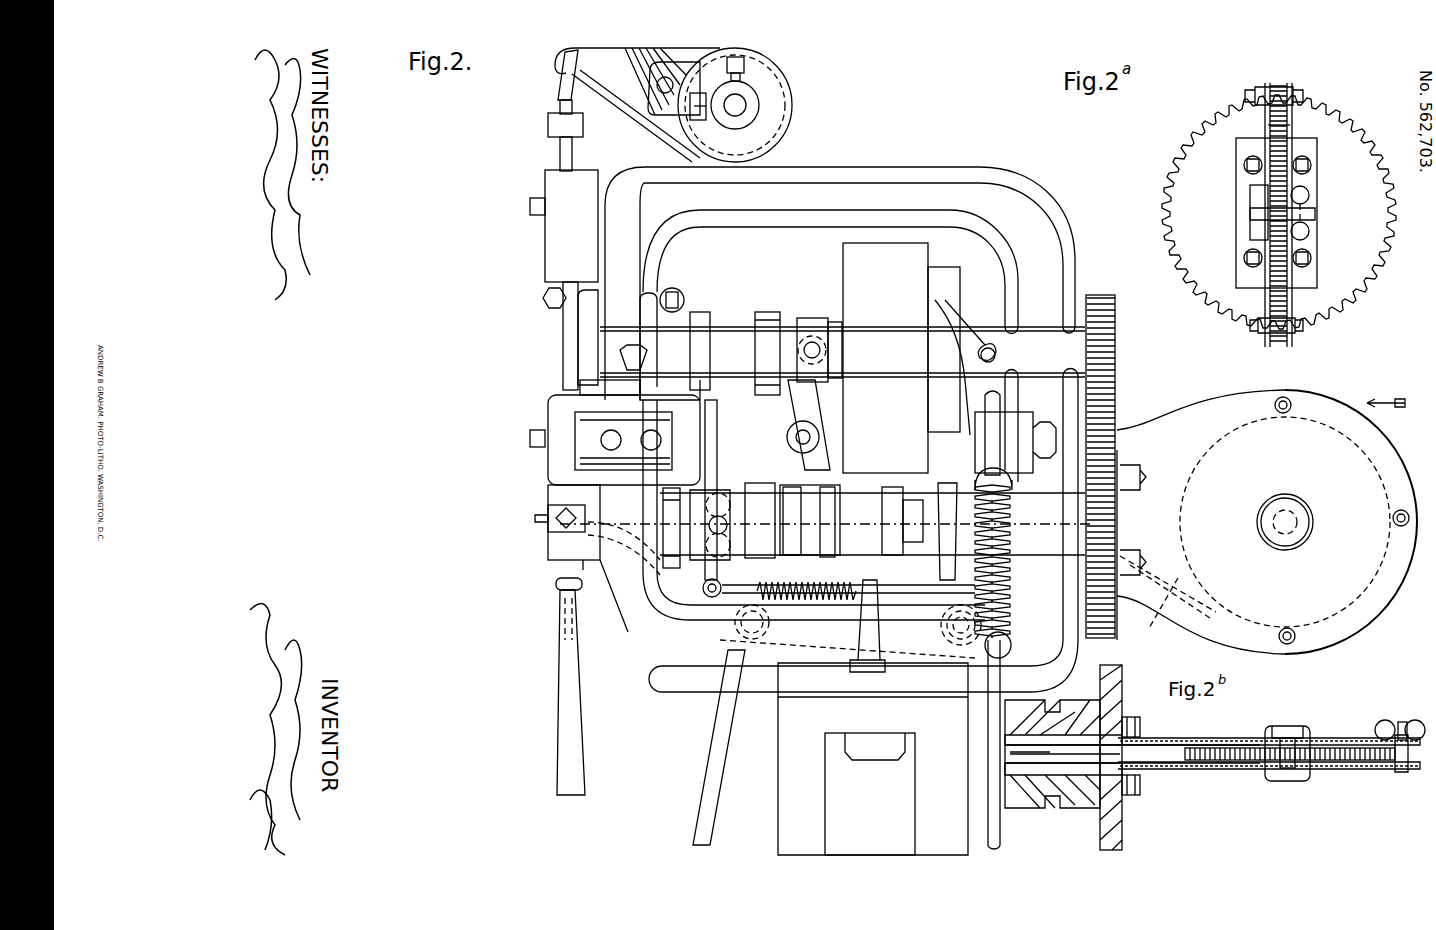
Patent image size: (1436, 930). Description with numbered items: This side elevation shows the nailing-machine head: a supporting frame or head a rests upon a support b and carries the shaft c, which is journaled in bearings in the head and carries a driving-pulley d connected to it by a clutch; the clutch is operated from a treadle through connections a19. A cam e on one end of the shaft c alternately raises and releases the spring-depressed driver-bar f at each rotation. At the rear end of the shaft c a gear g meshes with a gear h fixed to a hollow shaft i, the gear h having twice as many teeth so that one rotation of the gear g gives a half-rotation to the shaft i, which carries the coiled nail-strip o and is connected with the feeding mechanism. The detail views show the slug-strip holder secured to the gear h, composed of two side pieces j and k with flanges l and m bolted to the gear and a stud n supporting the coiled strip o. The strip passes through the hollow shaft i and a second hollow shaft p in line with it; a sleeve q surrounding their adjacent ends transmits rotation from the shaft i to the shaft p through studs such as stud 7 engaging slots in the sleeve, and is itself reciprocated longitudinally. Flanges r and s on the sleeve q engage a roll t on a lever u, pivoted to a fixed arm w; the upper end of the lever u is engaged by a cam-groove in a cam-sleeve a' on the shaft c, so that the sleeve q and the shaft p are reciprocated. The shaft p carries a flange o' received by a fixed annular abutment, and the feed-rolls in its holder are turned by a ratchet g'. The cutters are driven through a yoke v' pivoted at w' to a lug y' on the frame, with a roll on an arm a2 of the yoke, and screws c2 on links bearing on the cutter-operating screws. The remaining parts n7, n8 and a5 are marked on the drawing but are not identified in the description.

In FIG. 2, the pulley n7 is at (745, 68).
In FIG. 2, the pulley set bolt n8 is at (700, 108).
In FIG. 2, the stud 7 is at (745, 281).
In FIG. 2, the screw c2 is at (676, 290).
In FIG. 2, the shaft c is at (752, 325).
In FIG. 2, the lug y' is at (812, 333).
In FIG. 2, the cam-sleeve a' is at (836, 330).
In FIG. 2, the driving-pulley d is at (919, 358).
In FIG. 2, the cam e is at (586, 320).
In FIG. 2, the driver-bar f is at (570, 348).
In FIG. 2, the yoke v' is at (566, 378).
In FIG. 2, the pivot w' is at (598, 440).
In FIG. 2, the fixed arm w is at (777, 425).
In FIG. 2, the flange r is at (800, 490).
In FIG. 2, the ratchet g' is at (716, 498).
In FIG. 2, the support b is at (703, 500).
In FIG. 2, the hollow shaft p is at (738, 505).
In FIG. 2, the sleeve q is at (770, 540).
In FIG. 2, the lever u is at (828, 486).
In FIG. 2, the flange s is at (885, 500).
In FIG. 2, the roll t is at (905, 505).
In FIG. 2, the flange l is at (945, 500).
In FIG. 2A, the flange l is at (1310, 198).
In FIG. 2B, the flange l is at (1132, 720).
In FIG. 2, the arm a2 is at (565, 515).
In FIG. 2, the supporting frame or head a is at (860, 755).
In FIG. 2B, the supporting frame or head a is at (1063, 747).
In FIG. 2, the connection a19 is at (1002, 668).
In FIG. 2, the clamp bolt a5 is at (1000, 432).
In FIG. 2, the gear g is at (1112, 466).
In FIG. 2, the gear h is at (1118, 430).
In FIG. 2A, the gear h is at (1188, 165).
In FIG. 2B, the gear h is at (1110, 702).
In FIG. 2, the side piece k is at (1312, 636).
In FIG. 2A, the side piece k is at (1262, 105).
In FIG. 2B, the side piece k is at (1210, 770).
In FIG. 2, the stud n is at (1292, 520).
In FIG. 2B, the stud n is at (1300, 742).
In FIG. 2, the flange m is at (1124, 502).
In FIG. 2A, the flange m is at (1246, 203).
In FIG. 2B, the flange m is at (1135, 790).
In FIG. 2, the flange o' is at (1168, 604).
In FIG. 2A, the nail-strip o is at (1232, 115).
In FIG. 2B, the nail-strip o is at (1168, 793).
In FIG. 2A, the side piece j is at (1292, 125).
In FIG. 2B, the side piece j is at (1212, 746).
In FIG. 2B, the shaft i is at (1035, 795).